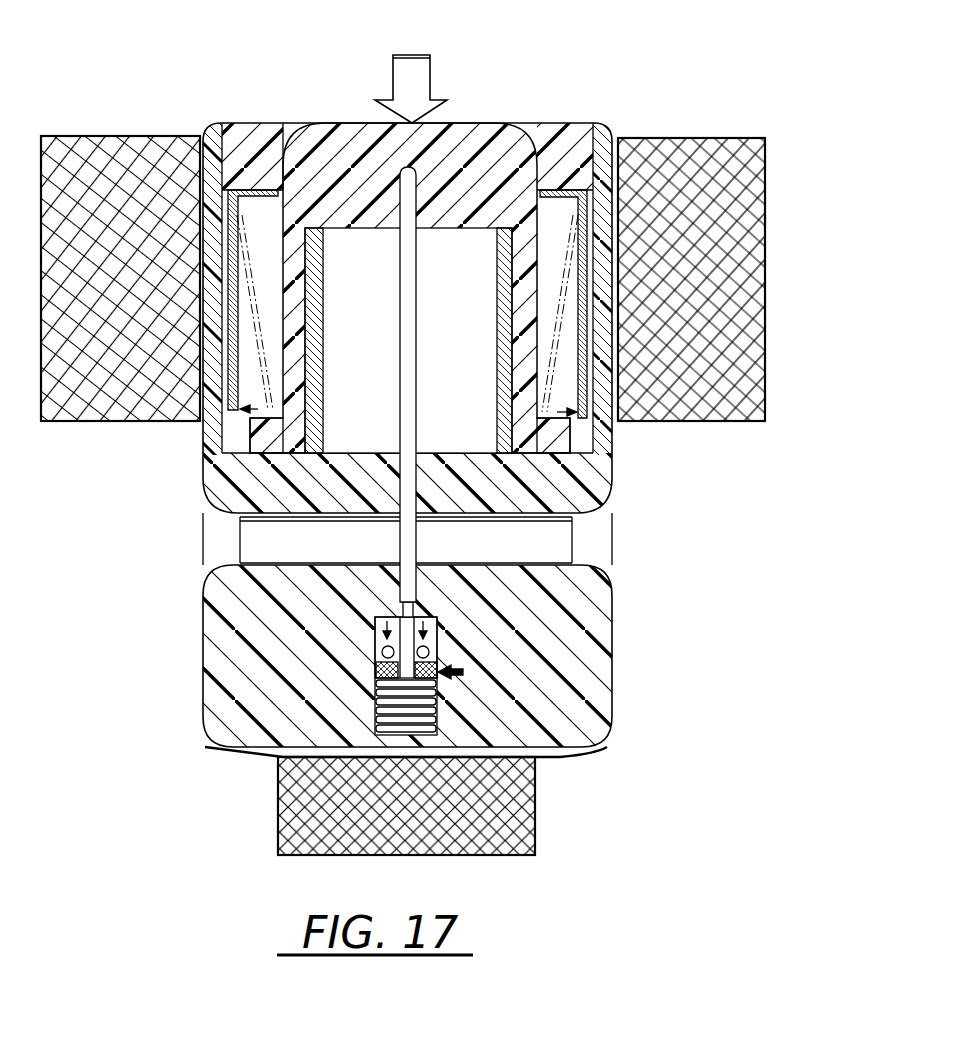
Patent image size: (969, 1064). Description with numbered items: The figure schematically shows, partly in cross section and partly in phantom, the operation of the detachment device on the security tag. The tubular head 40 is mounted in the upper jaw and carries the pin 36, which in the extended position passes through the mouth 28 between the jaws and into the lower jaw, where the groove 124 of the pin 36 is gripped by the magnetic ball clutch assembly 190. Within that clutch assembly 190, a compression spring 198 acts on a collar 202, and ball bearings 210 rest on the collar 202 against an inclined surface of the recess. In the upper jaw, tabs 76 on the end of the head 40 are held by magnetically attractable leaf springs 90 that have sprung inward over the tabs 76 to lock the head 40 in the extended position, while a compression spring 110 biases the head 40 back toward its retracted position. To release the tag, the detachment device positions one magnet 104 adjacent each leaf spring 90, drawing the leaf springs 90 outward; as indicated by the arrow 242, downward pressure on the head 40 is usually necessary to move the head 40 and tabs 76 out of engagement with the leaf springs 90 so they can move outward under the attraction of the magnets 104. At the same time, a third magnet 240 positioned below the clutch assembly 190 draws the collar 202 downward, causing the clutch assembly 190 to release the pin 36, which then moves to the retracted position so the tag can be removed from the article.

The arrow 242 is at (393, 70).
The head 40 is at (487, 125).
The magnet 104 is at (122, 411).
The pin 36 is at (410, 358).
The compression spring 110 is at (320, 373).
The leaf spring 90 is at (228, 413).
The tab 76 is at (562, 442).
The mouth 28 is at (598, 542).
The groove 124 is at (400, 610).
The ball bearing 210 is at (436, 645).
The collar 202 is at (380, 665).
The magnetic ball clutch assembly 190 is at (462, 675).
The compression spring 198 is at (377, 710).
The magnet 240 is at (538, 827).